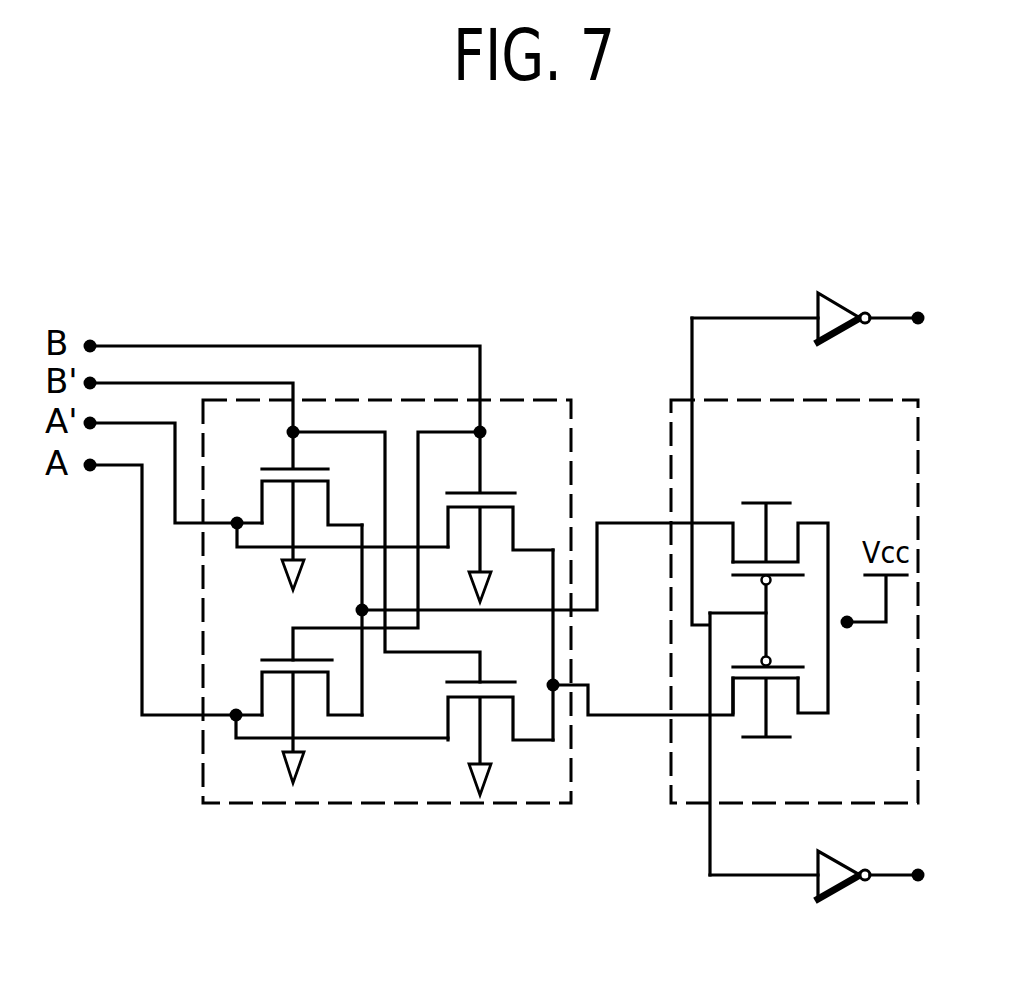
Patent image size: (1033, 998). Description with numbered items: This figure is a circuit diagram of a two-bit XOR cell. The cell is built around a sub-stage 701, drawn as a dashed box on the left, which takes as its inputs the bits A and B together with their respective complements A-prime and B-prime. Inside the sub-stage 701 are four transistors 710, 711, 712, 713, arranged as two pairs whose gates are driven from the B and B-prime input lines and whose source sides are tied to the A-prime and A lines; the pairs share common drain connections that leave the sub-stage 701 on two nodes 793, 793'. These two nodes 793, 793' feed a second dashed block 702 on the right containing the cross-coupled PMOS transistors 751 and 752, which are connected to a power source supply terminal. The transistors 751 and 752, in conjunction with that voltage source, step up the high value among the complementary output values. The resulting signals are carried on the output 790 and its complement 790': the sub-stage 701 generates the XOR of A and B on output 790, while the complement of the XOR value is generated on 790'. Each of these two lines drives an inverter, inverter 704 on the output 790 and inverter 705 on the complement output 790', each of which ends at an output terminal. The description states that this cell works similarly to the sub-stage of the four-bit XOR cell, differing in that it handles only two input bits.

The sub-stage 701 is at (538, 398).
The differential amplifier / sense stage 702 is at (775, 398).
The output inverter 704 is at (842, 292).
The complementary output inverter 705 is at (842, 895).
The pass transistor 710 is at (262, 480).
The pass transistor 711 is at (499, 490).
The pass transistor 712 is at (262, 671).
The pass transistor 713 is at (498, 682).
The cross-coupled PMOS transistor 751 is at (806, 563).
The cross-coupled PMOS transistor 752 is at (806, 680).
The output 790 is at (755, 282).
The complement output 790' is at (764, 916).
The intermediate node 793 is at (545, 531).
The complementary intermediate node 793' is at (640, 673).